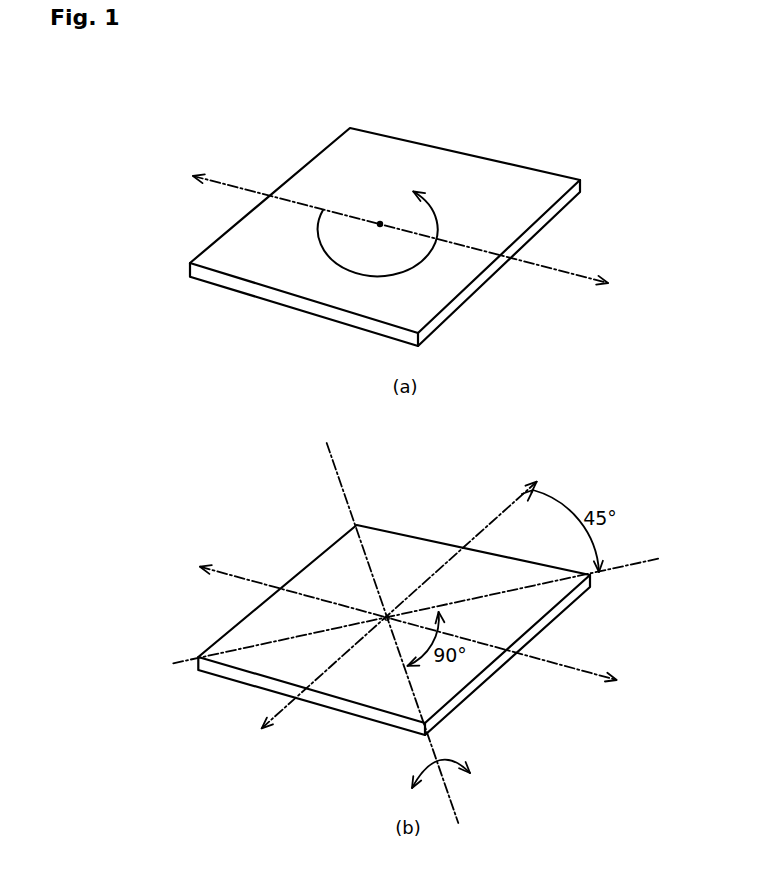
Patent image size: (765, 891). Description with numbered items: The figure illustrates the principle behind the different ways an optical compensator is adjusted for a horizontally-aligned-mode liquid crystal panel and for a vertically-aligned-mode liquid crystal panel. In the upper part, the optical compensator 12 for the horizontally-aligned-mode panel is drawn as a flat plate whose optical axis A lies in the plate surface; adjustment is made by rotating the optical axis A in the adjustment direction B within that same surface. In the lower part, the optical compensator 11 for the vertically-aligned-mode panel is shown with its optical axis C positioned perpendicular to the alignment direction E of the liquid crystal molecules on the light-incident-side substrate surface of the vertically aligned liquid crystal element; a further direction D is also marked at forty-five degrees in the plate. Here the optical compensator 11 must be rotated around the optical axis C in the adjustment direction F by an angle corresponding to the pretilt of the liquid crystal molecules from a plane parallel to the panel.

The optical compensator for vertically-aligned-mode 11 is at (332, 708).
The optical compensator 12 is at (462, 160).
The optical axis A is at (235, 185).
The adjustment direction B is at (437, 216).
The optical axis C is at (336, 461).
The optical axis direction at 45 degrees D is at (502, 512).
The alignment direction E is at (615, 572).
The adjustment direction F is at (443, 758).